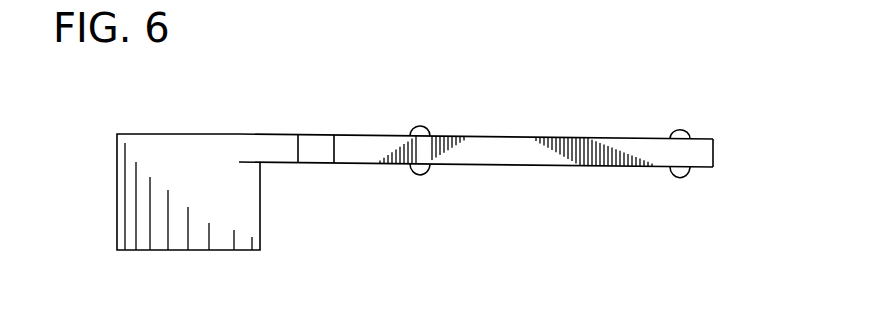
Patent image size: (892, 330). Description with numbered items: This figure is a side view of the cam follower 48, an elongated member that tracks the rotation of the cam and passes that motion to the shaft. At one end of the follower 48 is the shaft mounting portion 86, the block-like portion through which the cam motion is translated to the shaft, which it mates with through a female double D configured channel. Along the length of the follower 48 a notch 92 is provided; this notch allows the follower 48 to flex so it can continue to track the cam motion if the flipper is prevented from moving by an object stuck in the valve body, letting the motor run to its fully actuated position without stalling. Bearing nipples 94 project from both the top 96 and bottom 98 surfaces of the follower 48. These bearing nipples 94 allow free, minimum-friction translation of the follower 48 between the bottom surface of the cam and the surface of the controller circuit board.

The cam follower 48 is at (476, 144).
The shaft mounting portion 86 is at (197, 227).
The notch 92 is at (317, 144).
The bearing nipples 94 is at (419, 126).
The top surface 96 is at (498, 137).
The bottom surface 98 is at (495, 165).